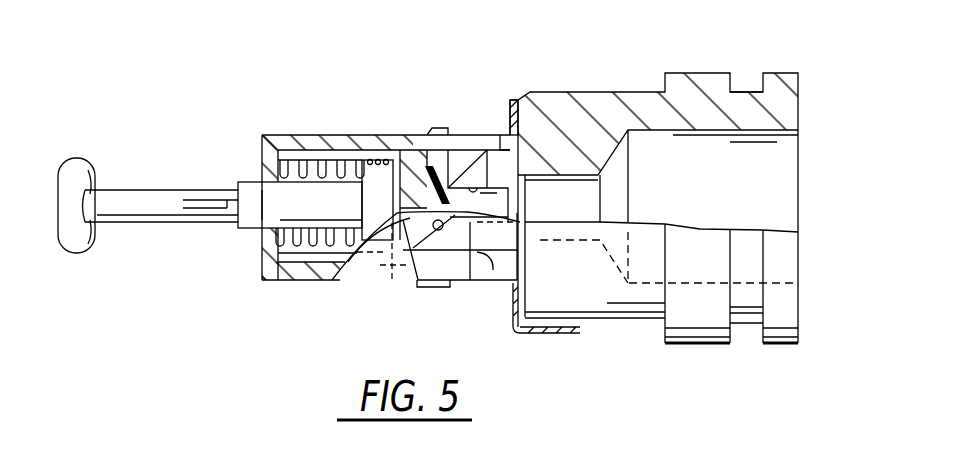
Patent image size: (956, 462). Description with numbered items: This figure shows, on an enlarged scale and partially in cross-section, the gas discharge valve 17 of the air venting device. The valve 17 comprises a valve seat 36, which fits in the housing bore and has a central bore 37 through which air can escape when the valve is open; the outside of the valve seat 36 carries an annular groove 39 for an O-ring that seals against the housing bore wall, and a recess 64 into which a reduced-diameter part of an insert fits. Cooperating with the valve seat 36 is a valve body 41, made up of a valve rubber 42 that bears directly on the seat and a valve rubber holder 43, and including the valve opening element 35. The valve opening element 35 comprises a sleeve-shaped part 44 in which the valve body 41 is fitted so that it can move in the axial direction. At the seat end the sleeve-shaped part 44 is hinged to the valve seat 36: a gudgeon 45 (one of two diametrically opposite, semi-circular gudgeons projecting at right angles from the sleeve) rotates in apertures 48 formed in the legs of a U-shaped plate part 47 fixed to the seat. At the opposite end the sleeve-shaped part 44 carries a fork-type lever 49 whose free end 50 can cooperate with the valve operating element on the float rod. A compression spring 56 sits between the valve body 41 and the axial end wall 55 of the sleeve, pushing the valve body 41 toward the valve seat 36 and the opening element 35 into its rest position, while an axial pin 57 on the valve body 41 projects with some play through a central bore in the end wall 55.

The valve 17 is at (633, 70).
The valve opening element 35 is at (255, 285).
The valve seat 36 is at (563, 98).
The central bore 37 is at (490, 188).
The annular groove 39 is at (735, 88).
The valve body 41 is at (374, 150).
The valve rubber 42 is at (458, 168).
The valve rubber holder 43 is at (413, 150).
The sleeve-shaped part 44 is at (268, 135).
The gudgeon 45 is at (467, 276).
The plate part 47 is at (483, 278).
The apertures 48 is at (410, 254).
The lever 49 is at (160, 158).
The free end 50 is at (78, 160).
The axial end wall 55 is at (262, 150).
The compression spring 56 is at (308, 135).
The axial pin 57 is at (243, 226).
The recess 64 is at (760, 136).